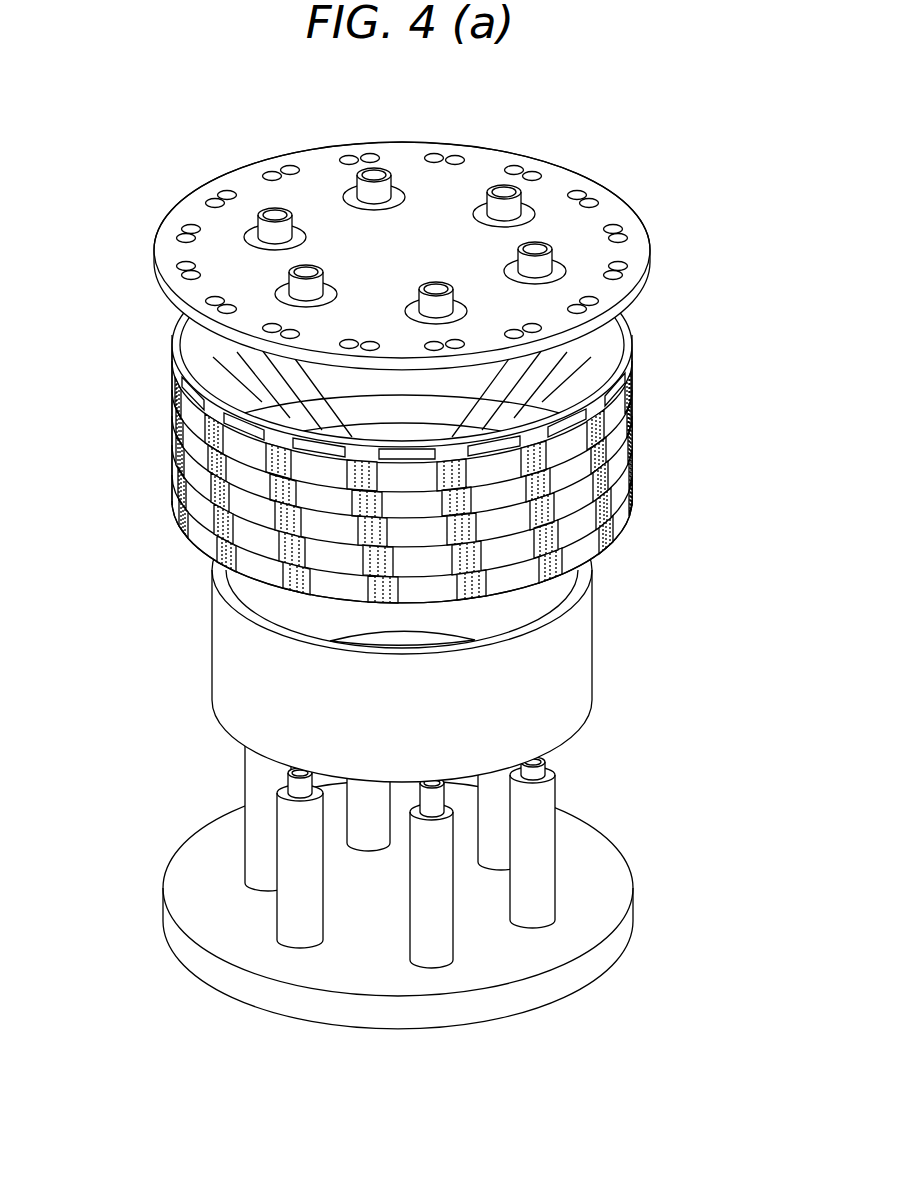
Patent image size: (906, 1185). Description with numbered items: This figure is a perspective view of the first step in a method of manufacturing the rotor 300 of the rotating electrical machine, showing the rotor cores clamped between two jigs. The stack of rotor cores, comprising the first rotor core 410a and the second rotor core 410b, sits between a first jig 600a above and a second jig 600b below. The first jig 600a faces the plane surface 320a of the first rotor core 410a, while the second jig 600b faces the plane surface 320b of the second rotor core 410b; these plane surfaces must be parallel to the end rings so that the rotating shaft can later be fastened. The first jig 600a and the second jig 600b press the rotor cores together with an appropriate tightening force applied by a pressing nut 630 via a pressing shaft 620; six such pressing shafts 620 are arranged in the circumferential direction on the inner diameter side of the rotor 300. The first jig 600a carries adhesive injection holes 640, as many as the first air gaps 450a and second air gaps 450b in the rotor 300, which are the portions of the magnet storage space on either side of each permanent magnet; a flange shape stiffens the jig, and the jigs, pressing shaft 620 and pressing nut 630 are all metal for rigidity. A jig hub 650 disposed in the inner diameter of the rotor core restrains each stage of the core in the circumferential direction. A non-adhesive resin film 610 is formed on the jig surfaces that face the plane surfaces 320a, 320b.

The rotor 300 is at (172, 442).
The plane surface 320a is at (600, 380).
The plane surface 320b is at (598, 567).
The first rotor core 410a is at (620, 415).
The second rotor core 410b is at (618, 518).
The first air gap 450a is at (628, 473).
The second air gap 450b is at (620, 432).
The first jig 600a is at (638, 248).
The second jig 600b is at (190, 953).
The non-adhesive resin film 610 is at (620, 897).
The pressing shaft 620 is at (287, 845).
The pressing nut 630 is at (252, 234).
The adhesive injection holes 640 is at (182, 272).
The jig hub 650 is at (228, 688).